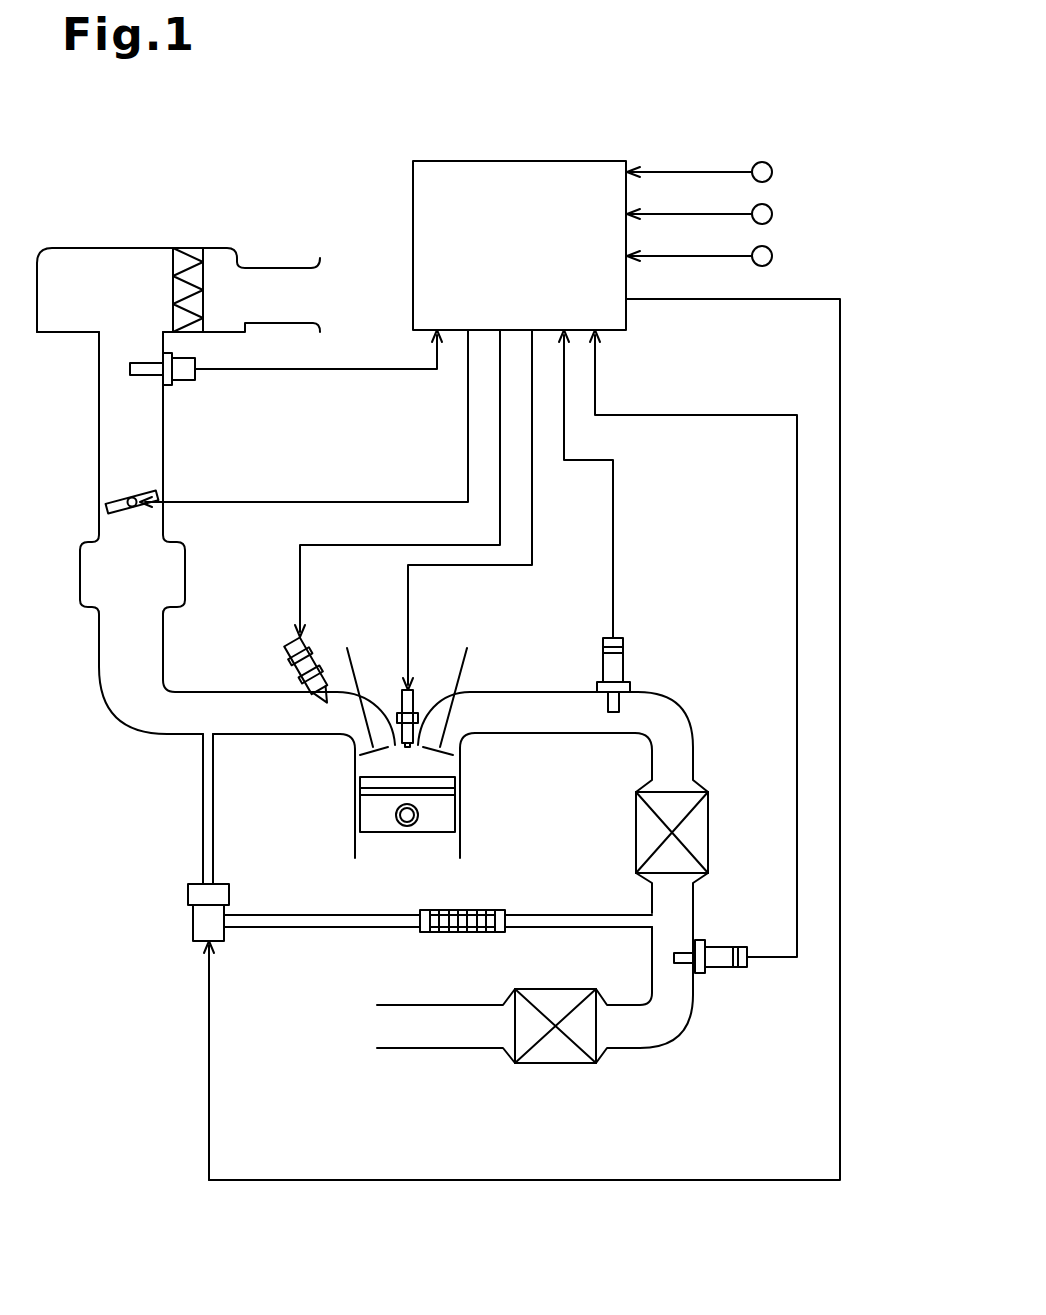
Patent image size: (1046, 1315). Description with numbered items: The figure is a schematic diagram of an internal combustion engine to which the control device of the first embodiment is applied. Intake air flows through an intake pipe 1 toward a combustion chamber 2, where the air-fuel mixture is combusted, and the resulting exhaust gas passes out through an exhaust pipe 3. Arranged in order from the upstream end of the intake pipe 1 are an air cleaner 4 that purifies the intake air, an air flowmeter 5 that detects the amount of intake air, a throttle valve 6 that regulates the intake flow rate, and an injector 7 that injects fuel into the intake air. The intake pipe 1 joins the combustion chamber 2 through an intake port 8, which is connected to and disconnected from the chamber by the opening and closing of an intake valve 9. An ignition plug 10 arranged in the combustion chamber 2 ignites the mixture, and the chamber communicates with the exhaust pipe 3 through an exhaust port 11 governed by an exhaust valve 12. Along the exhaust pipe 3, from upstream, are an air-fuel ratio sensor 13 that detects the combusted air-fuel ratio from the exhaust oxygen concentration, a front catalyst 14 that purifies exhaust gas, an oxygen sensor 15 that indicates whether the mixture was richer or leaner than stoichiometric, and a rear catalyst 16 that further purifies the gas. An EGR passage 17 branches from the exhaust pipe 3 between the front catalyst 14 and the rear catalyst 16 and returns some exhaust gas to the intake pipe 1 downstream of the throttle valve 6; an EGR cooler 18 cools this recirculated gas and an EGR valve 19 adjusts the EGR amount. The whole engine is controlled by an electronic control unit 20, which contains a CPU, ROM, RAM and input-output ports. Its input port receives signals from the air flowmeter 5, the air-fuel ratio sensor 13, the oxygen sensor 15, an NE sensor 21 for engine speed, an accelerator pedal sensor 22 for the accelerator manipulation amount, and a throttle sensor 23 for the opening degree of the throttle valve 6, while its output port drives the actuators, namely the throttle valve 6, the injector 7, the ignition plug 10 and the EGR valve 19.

The intake pipe 1 is at (163, 438).
The combustion chamber 2 is at (398, 774).
The exhaust pipe 3 is at (693, 758).
The air cleaner 4 is at (130, 247).
The air flowmeter 5 is at (200, 380).
The throttle valve 6 is at (144, 492).
The injector 7 is at (290, 650).
The intake port 8 is at (338, 729).
The intake valve 9 is at (360, 668).
The ignition plug 10 is at (415, 702).
The exhaust port 11 is at (463, 724).
The exhaust valve 12 is at (460, 684).
The air-fuel ratio sensor 13 is at (626, 660).
The front catalyst 14 is at (710, 834).
The oxygen sensor 15 is at (727, 972).
The rear catalyst 16 is at (560, 1065).
The EGR passage 17 is at (332, 930).
The EGR cooler 18 is at (458, 935).
The EGR valve 19 is at (188, 925).
The electronic control unit 20 is at (563, 160).
The NE sensor 21 is at (772, 175).
The accelerator pedal sensor 22 is at (772, 217).
The throttle sensor 23 is at (772, 259).